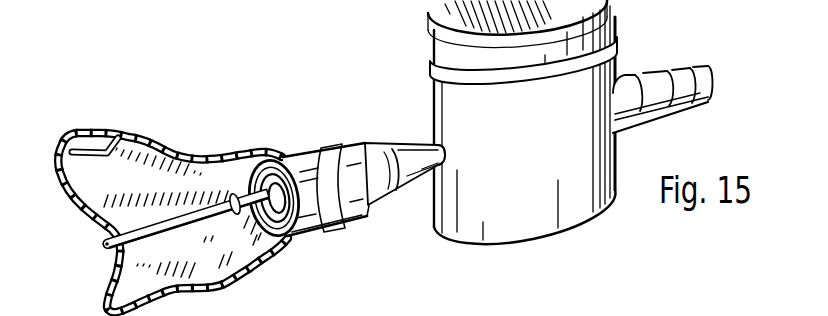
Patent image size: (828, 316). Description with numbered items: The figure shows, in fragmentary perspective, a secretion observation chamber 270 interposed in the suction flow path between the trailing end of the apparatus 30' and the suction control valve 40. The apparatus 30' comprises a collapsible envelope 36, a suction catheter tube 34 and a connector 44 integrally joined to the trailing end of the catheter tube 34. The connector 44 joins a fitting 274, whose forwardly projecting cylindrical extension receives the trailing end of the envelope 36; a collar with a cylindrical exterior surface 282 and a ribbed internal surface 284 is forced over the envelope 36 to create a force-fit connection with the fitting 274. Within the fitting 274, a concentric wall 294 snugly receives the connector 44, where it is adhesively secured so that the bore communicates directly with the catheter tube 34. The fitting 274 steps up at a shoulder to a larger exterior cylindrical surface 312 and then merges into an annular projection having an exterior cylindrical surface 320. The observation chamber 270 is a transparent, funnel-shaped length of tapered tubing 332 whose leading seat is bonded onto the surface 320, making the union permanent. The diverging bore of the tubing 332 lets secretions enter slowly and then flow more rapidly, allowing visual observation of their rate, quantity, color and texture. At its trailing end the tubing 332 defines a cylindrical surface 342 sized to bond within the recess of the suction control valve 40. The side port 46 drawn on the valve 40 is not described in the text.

The apparatus 30' is at (173, 182).
The collapsible envelope 36 is at (163, 135).
The suction catheter tube 34 is at (104, 267).
The connector 44 is at (244, 191).
The internal surface of the collar 284 is at (263, 152).
The wall 294 is at (280, 220).
The fitting 274 is at (290, 134).
The cylindrical exterior surface 282 is at (318, 226).
The exterior cylindrical surface 312 is at (368, 217).
The observation chamber 270 is at (383, 130).
The exterior cylindrical surface 320 is at (399, 146).
The tapered tubing 332 is at (407, 182).
The cylindrical surface 342 is at (441, 155).
The suction control valve 40 is at (474, 232).
The barbed port 46 is at (625, 90).